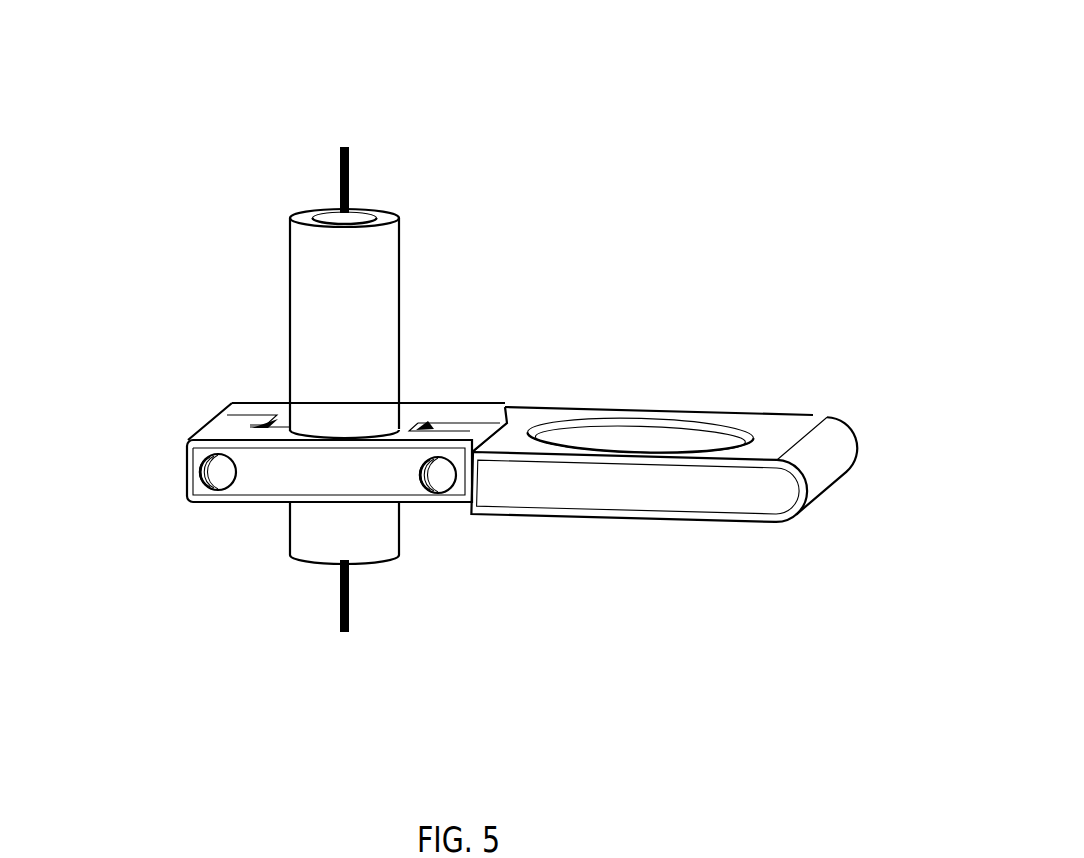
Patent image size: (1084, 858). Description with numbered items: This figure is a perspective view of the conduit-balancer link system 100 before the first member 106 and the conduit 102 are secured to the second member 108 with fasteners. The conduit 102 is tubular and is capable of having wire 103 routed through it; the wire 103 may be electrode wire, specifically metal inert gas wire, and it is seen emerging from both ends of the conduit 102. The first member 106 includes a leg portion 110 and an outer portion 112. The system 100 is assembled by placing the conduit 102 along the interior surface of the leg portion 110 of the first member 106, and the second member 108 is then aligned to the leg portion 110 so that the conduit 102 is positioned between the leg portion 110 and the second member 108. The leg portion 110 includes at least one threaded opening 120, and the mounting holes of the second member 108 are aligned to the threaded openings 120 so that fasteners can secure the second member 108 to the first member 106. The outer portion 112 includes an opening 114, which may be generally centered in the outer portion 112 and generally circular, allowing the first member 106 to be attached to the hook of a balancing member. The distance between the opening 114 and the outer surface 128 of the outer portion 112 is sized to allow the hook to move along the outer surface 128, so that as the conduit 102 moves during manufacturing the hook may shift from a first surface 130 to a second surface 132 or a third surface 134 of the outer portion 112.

The conduit-balancer link system 100 is at (598, 84).
The conduit 102 is at (401, 351).
The wire 103 is at (341, 178).
The first member 106 is at (503, 408).
The second member 108 is at (239, 501).
The leg portion 110 is at (247, 408).
The outer portion 112 is at (775, 432).
The opening 114 is at (697, 437).
The threaded opening 120 is at (203, 463).
The outer surface 128 is at (820, 462).
The first surface 130 is at (668, 409).
The second surface 132 is at (836, 488).
The third surface 134 is at (588, 517).